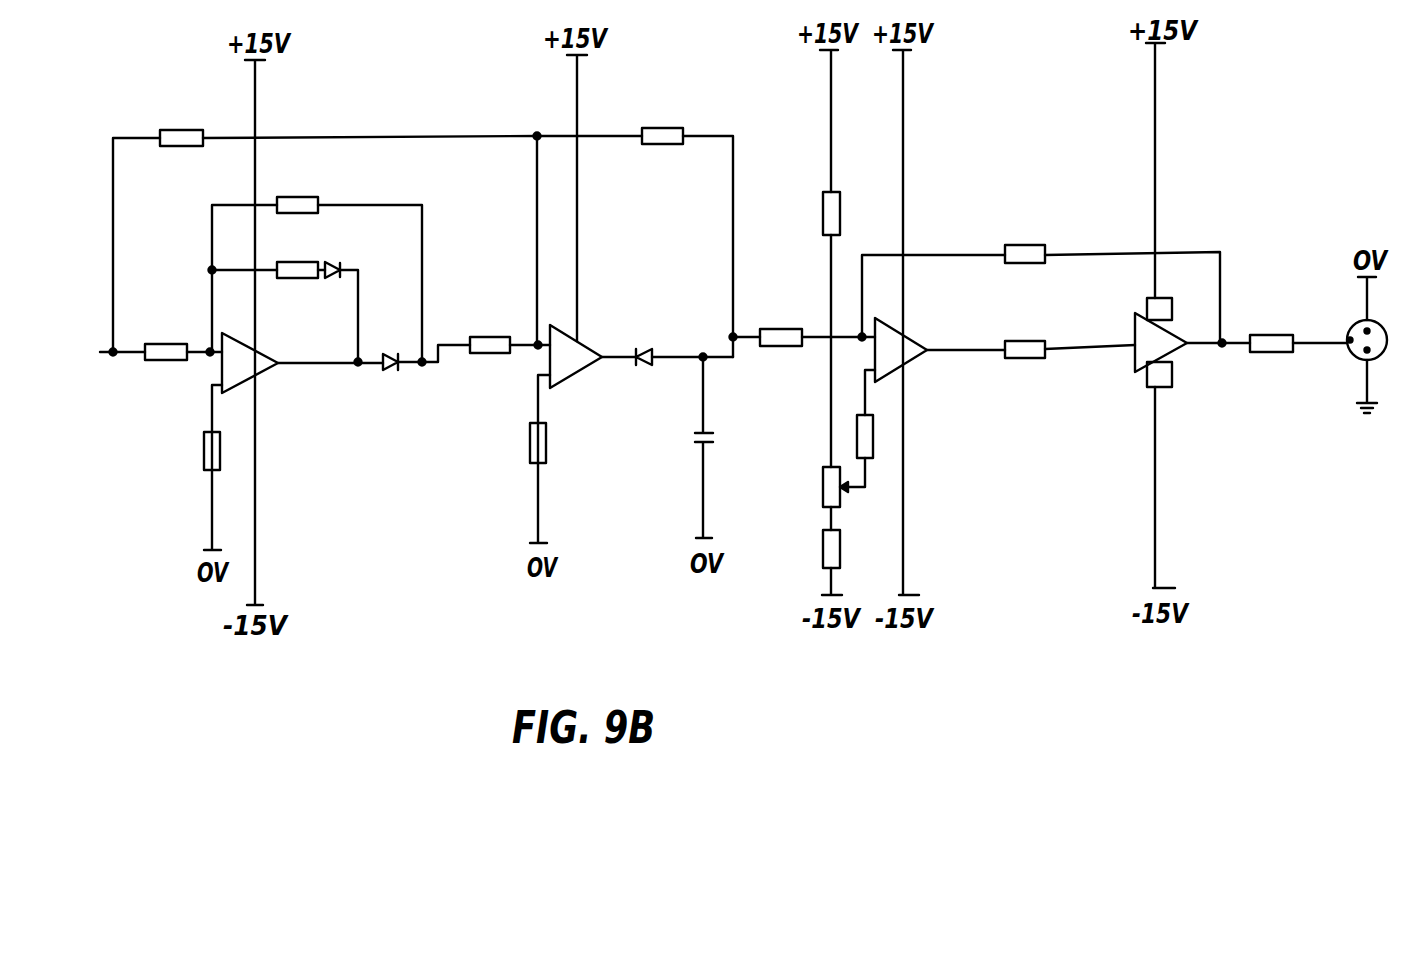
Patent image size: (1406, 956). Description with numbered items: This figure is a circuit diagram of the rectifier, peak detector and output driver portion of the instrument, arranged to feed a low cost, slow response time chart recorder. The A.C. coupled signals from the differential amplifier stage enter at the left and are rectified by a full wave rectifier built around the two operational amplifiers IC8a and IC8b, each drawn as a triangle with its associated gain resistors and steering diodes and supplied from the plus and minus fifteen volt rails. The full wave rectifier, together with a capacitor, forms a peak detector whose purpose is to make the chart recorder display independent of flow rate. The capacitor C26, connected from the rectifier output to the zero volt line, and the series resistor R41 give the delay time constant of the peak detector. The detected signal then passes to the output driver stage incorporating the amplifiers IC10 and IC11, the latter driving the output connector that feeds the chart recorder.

The op-amp IC8a is at (266, 372).
The op-amp IC8b is at (582, 372).
The amplifier IC10 is at (912, 362).
The amplifier IC11 is at (1178, 352).
The resistor R41 is at (783, 328).
The capacitor C26 is at (712, 443).